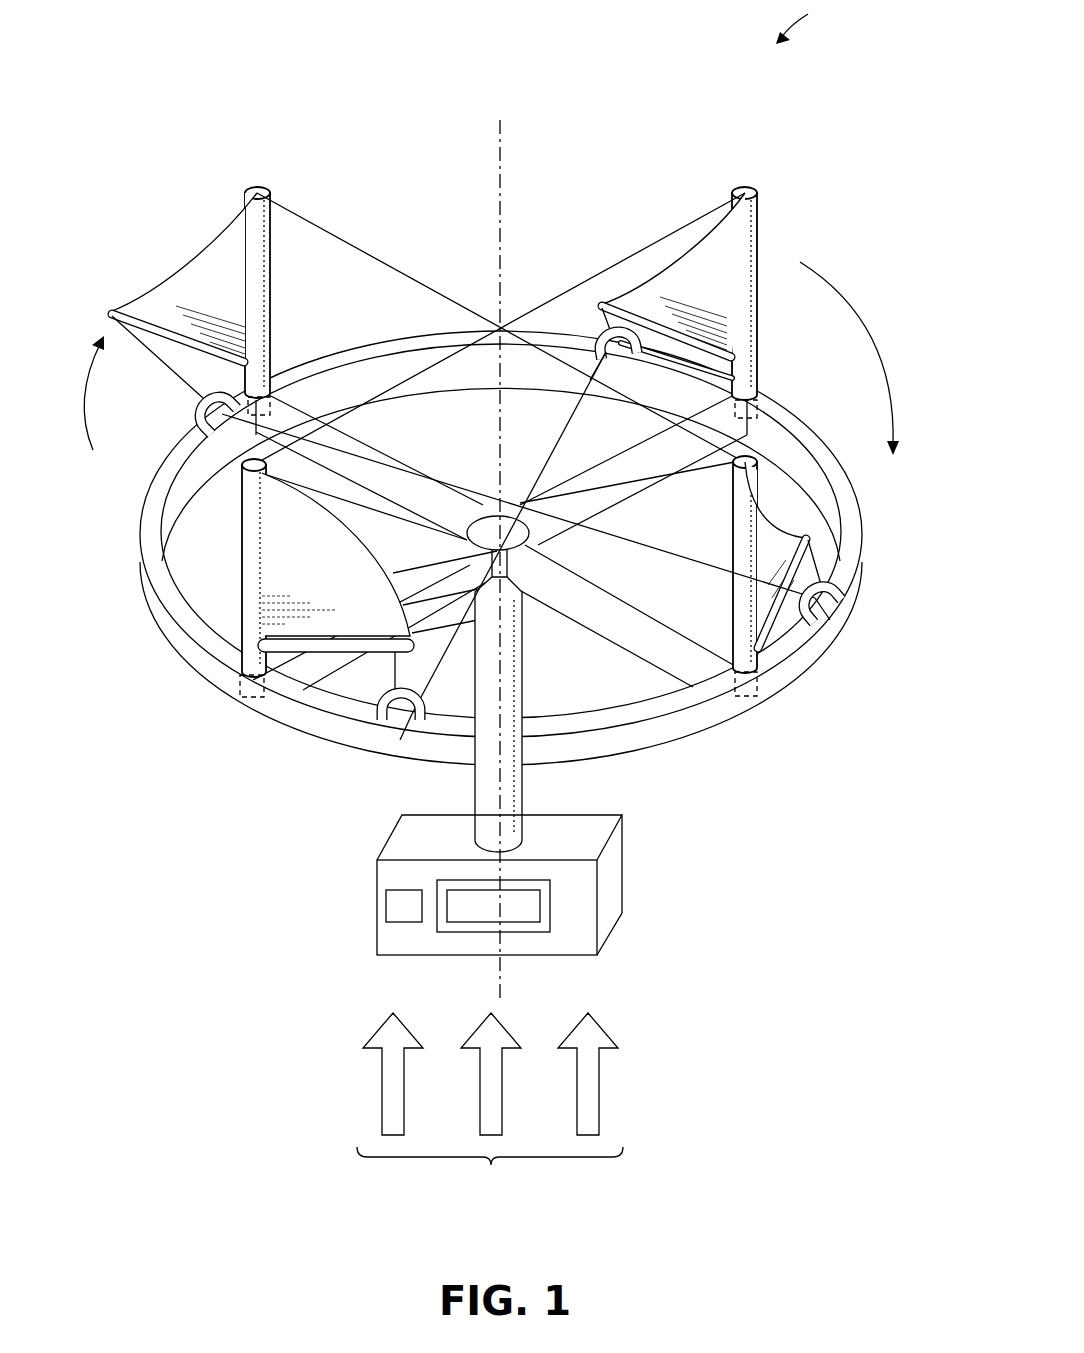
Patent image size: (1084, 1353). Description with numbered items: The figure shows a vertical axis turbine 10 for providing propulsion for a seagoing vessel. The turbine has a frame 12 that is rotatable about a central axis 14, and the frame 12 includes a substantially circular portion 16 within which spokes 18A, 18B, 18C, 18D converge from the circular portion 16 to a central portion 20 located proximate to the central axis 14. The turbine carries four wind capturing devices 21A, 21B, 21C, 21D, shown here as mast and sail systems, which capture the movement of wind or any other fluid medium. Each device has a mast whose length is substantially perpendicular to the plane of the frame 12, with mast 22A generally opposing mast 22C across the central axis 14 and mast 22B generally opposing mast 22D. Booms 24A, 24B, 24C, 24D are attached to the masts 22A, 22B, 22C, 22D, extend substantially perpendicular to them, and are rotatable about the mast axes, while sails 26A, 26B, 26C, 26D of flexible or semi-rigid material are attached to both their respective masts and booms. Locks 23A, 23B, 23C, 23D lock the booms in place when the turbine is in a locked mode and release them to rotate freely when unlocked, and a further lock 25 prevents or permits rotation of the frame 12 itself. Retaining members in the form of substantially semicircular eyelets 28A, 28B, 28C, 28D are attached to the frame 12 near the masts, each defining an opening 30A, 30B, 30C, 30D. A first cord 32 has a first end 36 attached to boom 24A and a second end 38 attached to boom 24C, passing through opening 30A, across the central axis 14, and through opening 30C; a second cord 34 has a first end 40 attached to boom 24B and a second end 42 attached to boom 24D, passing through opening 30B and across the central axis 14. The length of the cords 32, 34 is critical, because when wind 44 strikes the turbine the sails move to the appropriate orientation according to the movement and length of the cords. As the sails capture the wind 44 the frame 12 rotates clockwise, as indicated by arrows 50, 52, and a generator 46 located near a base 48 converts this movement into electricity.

The vertical axis turbine 10 is at (803, 22).
The frame 12 is at (818, 458).
The central axis 14 is at (488, 178).
The substantially circular portion 16 is at (828, 472).
The spoke 18A is at (293, 523).
The spoke 18B is at (652, 456).
The spoke 18C is at (690, 640).
The spoke 18D is at (440, 500).
The central portion 20 is at (466, 533).
The wind capturing device 21A is at (285, 310).
The wind capturing device 21B is at (770, 312).
The wind capturing device 21C is at (720, 597).
The wind capturing device 21D is at (230, 540).
The mast 22A is at (268, 272).
The mast 22B is at (760, 215).
The mast 22C is at (735, 505).
The mast 22D is at (240, 580).
The lock 23A is at (290, 385).
The lock 23B is at (240, 690).
The lock 23C is at (745, 698).
The lock 23D is at (760, 410).
The boom 24A is at (115, 302).
The boom 24B is at (606, 305).
The boom 24C is at (812, 540).
The boom 24D is at (440, 647).
The lock 25 is at (395, 903).
The sail 26A is at (225, 228).
The sail 26B is at (707, 242).
The sail 26C is at (800, 520).
The sail 26D is at (380, 422).
The eyelet 28A is at (200, 424).
The eyelet 28B is at (598, 335).
The eyelet 28C is at (842, 606).
The eyelet 28D is at (386, 722).
The opening 30A is at (212, 398).
The opening 30B is at (628, 362).
The opening 30C is at (830, 616).
The opening 30D is at (408, 724).
The first cord 32 is at (240, 453).
The second cord 34 is at (570, 430).
The first end 36 is at (195, 390).
The second end 38 is at (836, 592).
The first end 40 is at (633, 330).
The second end 42 is at (395, 672).
The wind 44 is at (490, 1104).
The generator 46 is at (535, 905).
The base 48 is at (514, 838).
The arrow 50 is at (80, 406).
The arrow 52 is at (860, 307).